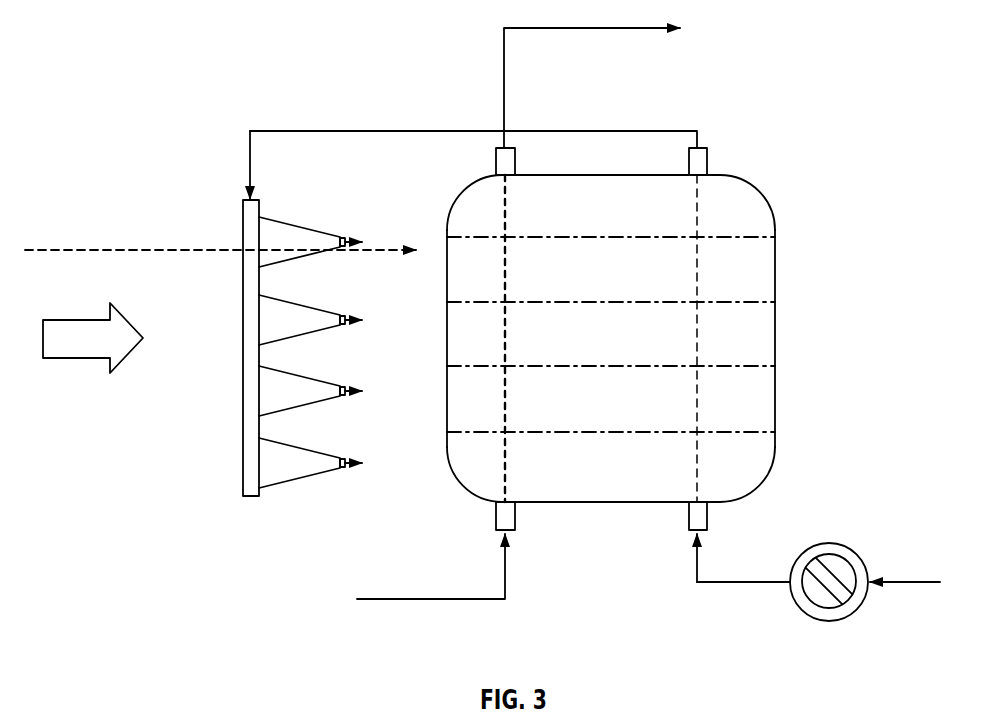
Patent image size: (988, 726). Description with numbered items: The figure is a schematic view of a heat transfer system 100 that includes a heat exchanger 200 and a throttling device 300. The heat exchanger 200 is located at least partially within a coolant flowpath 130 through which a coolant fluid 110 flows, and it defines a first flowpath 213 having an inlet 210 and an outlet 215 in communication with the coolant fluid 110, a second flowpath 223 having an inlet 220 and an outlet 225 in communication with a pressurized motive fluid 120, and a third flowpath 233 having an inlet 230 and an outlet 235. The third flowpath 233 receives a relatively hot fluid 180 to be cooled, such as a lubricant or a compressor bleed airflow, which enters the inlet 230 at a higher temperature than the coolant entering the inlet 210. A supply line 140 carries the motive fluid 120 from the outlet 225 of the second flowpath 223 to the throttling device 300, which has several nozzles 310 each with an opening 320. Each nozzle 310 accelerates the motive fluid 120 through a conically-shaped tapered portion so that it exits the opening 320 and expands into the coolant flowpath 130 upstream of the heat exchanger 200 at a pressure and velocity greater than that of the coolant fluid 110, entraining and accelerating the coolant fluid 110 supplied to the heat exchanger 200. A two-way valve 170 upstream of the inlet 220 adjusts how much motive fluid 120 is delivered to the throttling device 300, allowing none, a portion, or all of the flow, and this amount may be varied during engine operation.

The heat transfer system 100 is at (842, 53).
The coolant fluid 110 is at (75, 350).
The motive fluid 120 is at (338, 130).
The coolant flowpath 130 is at (117, 250).
The supply line 140 is at (250, 141).
The valve 170 is at (847, 548).
The hot fluid 180 is at (440, 600).
The heat exchanger 200 is at (804, 430).
The inlet 210 is at (436, 366).
The first flowpath 213 is at (735, 300).
The outlet 215 is at (782, 306).
The inlet 220 is at (691, 518).
The second flowpath 223 is at (720, 192).
The outlet 225 is at (711, 156).
The inlet 230 is at (493, 517).
The third flowpath 233 is at (512, 465).
The outlet 235 is at (498, 147).
The throttling device 300 is at (243, 472).
The nozzles 310 is at (278, 485).
The openings 320 is at (348, 469).